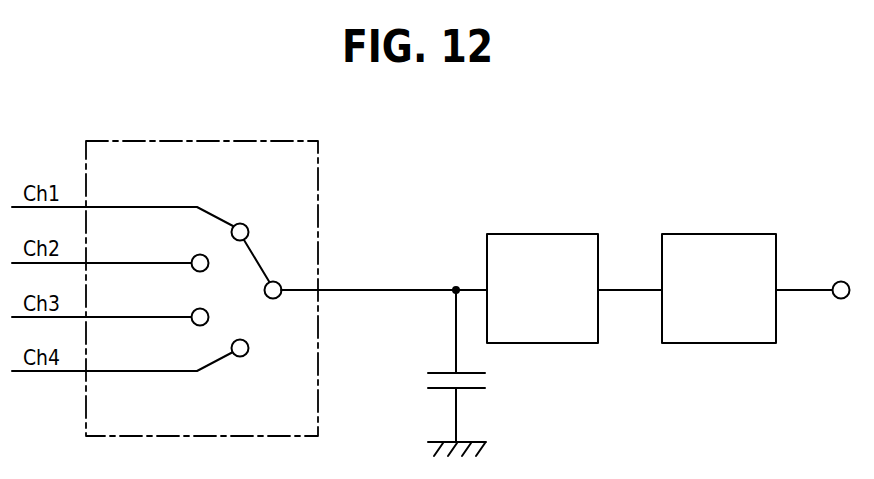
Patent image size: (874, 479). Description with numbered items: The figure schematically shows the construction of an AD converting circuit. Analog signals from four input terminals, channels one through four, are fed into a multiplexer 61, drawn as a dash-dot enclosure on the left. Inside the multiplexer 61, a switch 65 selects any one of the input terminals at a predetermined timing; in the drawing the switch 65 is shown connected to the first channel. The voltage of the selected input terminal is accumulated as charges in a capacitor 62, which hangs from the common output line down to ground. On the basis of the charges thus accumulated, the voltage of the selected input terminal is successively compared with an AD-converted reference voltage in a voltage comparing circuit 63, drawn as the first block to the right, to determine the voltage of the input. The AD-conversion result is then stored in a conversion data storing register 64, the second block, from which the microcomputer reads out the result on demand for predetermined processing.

The multiplexer 61 is at (264, 141).
The capacitor 62 is at (427, 382).
The voltage comparing circuit 63 is at (544, 234).
The conversion data storing register 64 is at (704, 234).
The switch 65 is at (268, 252).